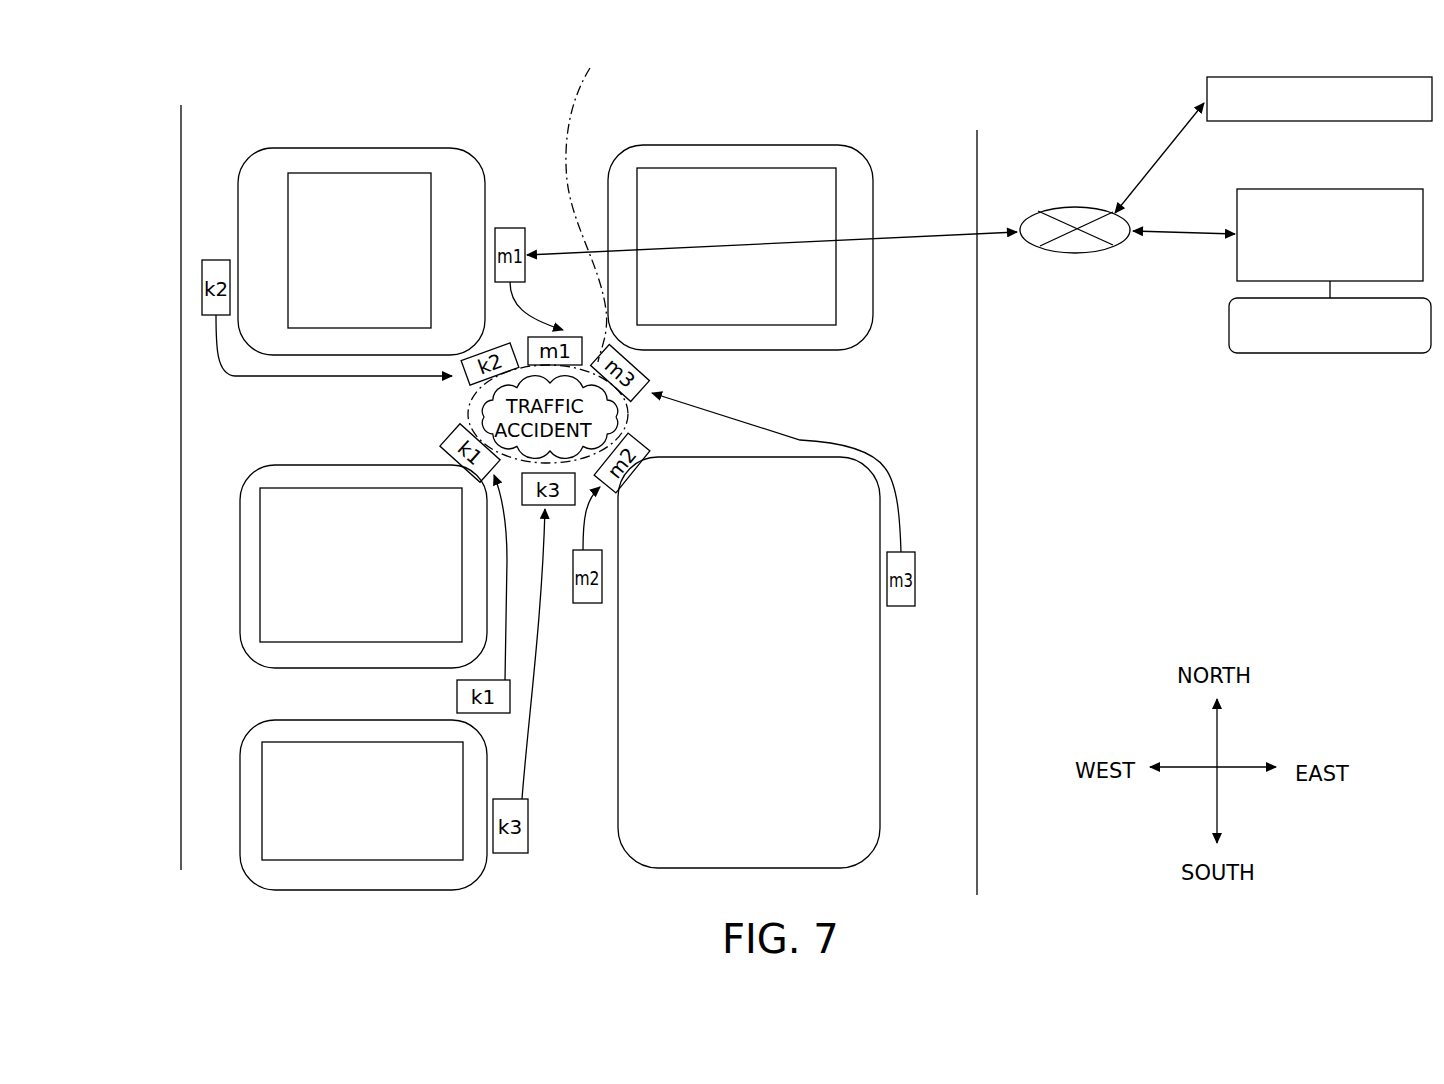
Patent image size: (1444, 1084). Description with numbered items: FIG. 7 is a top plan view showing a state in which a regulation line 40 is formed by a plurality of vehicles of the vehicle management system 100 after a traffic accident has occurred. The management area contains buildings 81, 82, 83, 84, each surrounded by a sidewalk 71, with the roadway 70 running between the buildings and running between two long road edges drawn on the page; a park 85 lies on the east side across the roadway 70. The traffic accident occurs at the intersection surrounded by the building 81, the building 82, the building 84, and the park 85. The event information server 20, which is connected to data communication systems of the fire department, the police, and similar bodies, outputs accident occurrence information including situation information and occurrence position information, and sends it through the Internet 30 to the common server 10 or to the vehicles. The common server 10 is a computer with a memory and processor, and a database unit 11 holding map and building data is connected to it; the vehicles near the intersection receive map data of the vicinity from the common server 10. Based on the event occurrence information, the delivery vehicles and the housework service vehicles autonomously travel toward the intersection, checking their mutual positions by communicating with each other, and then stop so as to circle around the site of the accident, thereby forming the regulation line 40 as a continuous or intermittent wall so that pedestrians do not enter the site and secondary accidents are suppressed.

The common server 10 is at (1320, 188).
The database unit 11 is at (1352, 353).
The event information server 20 is at (1323, 77).
The Internet 30 is at (1092, 208).
The regulation line 40 is at (548, 252).
The roadway 70 is at (222, 468).
The sidewalk 71 is at (267, 168).
The building 81 is at (367, 177).
The building 82 is at (258, 556).
The building 83 is at (335, 862).
The building 84 is at (705, 166).
The park 85 is at (881, 712).
The information providing system 100 is at (1015, 114).